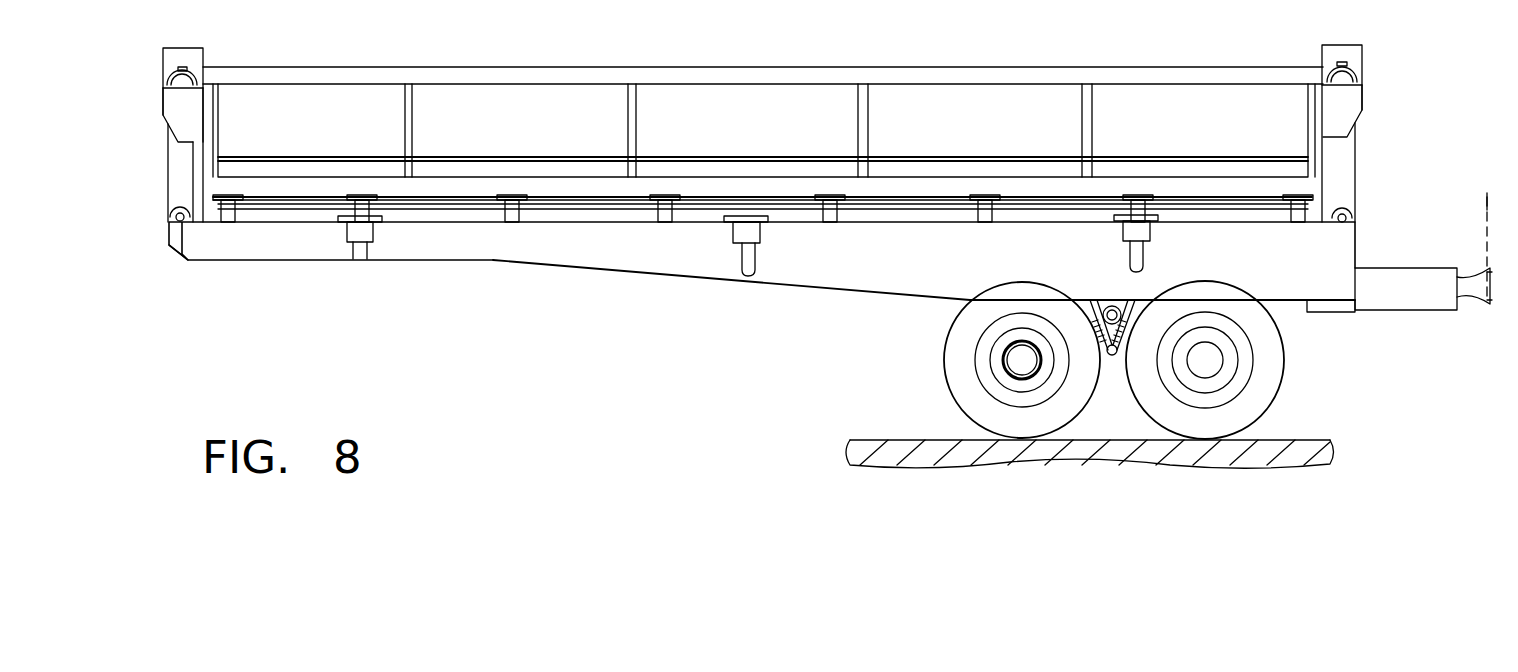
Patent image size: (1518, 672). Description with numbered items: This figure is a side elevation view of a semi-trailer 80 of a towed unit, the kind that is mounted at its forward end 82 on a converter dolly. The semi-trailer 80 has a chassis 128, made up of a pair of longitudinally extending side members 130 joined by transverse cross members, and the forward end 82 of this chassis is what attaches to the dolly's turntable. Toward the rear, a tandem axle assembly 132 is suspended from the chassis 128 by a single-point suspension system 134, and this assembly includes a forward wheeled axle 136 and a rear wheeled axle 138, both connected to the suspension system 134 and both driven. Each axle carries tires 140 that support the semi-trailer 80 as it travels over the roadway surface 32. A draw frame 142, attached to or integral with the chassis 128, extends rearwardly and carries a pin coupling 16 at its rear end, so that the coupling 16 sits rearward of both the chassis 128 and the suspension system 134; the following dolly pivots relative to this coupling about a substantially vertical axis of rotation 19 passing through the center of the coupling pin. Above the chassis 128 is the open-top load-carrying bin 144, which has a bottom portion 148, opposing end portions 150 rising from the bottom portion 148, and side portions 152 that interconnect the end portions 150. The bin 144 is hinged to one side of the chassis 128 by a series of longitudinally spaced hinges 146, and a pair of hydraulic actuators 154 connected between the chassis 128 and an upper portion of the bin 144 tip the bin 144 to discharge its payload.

The semi-trailer 80 is at (828, 46).
The load-carrying bin 144 is at (744, 62).
The side portion 152 is at (453, 100).
The end portion 150 is at (220, 100).
The actuator 154 is at (190, 154).
The bottom portion 148 is at (577, 217).
The hinge 146 is at (377, 232).
The chassis 128 is at (536, 268).
The side member 130 is at (796, 270).
The forward end 82 is at (207, 262).
The draw frame 142 is at (1426, 320).
The pin coupling 16 is at (1476, 260).
The axis of rotation 19 is at (1487, 205).
The tire 140 is at (950, 331).
The forward wheeled axle 136 is at (1016, 366).
The rear wheeled axle 138 is at (1210, 368).
The single-point suspension system 134 is at (1113, 376).
The tandem axle assembly 132 is at (1320, 386).
The roadway surface 32 is at (875, 438).